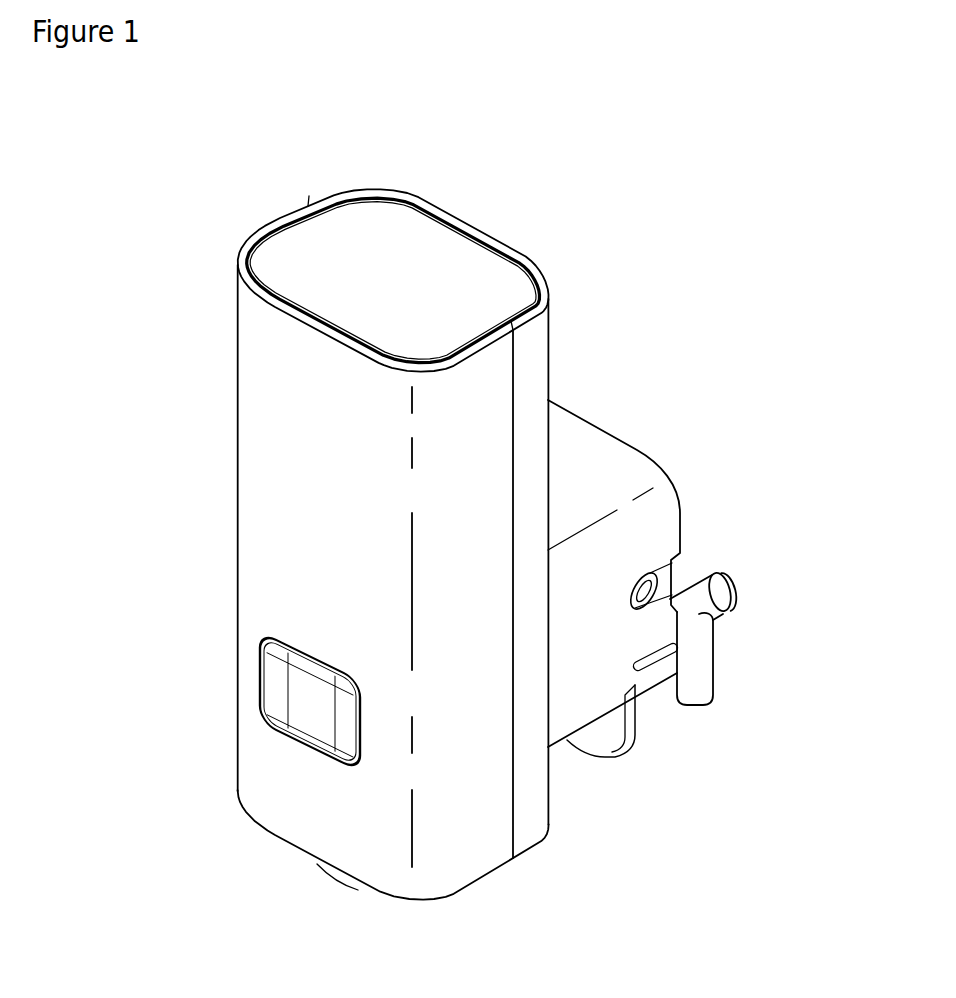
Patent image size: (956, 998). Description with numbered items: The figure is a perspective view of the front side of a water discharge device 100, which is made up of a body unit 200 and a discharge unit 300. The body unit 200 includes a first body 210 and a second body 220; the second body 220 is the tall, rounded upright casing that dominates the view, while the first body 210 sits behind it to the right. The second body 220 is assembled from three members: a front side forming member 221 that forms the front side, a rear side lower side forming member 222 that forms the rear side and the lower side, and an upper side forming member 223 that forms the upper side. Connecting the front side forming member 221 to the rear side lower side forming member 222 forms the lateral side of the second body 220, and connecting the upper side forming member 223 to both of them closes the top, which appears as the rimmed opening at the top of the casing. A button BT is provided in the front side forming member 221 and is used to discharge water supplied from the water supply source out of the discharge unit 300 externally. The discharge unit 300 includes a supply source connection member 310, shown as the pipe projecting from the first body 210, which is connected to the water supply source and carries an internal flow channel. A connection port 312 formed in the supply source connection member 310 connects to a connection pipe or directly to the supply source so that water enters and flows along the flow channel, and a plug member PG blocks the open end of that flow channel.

The water discharge device 100 is at (247, 122).
The body unit 200 is at (212, 225).
The second body 220 is at (560, 337).
The front side forming member 221 is at (254, 462).
The rear side lower side forming member 222 is at (531, 388).
The upper side forming member 223 is at (446, 247).
The button BT is at (302, 694).
The first body 210 is at (651, 442).
The discharge unit 300 is at (750, 597).
The supply source connection member 310 is at (730, 644).
The connection port 312 is at (703, 674).
The plug member PG is at (715, 574).